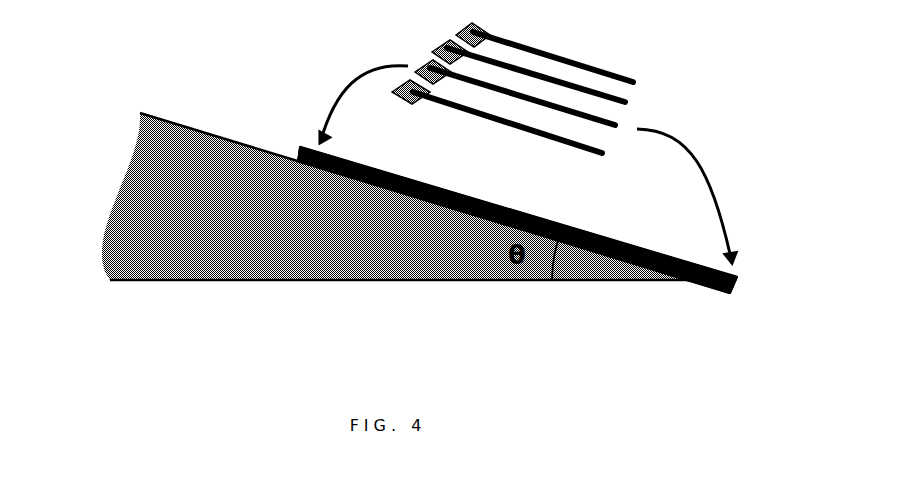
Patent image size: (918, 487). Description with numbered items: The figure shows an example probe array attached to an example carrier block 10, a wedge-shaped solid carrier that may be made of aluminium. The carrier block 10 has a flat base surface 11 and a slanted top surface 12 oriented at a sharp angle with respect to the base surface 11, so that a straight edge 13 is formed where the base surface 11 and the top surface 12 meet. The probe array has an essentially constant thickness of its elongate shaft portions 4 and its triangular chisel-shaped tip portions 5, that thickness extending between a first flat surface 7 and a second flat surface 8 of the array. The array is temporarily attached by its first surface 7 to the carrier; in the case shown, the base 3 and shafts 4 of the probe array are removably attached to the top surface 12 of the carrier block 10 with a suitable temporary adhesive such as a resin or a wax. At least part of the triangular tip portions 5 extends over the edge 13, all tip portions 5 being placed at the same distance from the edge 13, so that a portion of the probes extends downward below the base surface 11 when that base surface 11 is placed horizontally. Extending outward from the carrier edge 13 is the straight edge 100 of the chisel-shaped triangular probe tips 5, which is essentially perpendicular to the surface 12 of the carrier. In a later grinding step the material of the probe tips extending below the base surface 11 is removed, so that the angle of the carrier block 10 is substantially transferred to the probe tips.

The carrier 10 is at (247, 214).
The base surface 11 is at (205, 282).
The slanted top surface 12 is at (192, 128).
The base 3 is at (309, 140).
The elongate shaft portions 4 is at (438, 190).
The second flat surface 8 is at (517, 209).
The first flat surface 7 is at (483, 217).
The triangular chisel-shaped tip portions 5 is at (703, 287).
The straight edge 13 is at (678, 282).
The straight edge of probe tips 100 is at (727, 295).